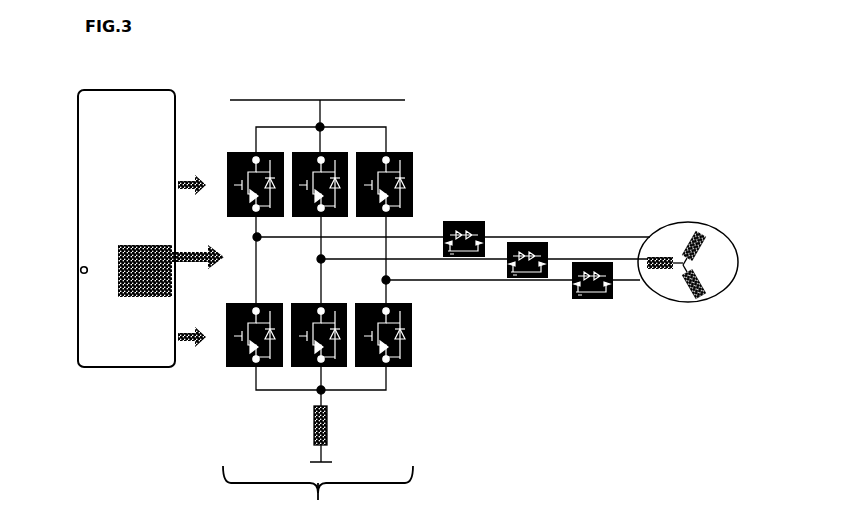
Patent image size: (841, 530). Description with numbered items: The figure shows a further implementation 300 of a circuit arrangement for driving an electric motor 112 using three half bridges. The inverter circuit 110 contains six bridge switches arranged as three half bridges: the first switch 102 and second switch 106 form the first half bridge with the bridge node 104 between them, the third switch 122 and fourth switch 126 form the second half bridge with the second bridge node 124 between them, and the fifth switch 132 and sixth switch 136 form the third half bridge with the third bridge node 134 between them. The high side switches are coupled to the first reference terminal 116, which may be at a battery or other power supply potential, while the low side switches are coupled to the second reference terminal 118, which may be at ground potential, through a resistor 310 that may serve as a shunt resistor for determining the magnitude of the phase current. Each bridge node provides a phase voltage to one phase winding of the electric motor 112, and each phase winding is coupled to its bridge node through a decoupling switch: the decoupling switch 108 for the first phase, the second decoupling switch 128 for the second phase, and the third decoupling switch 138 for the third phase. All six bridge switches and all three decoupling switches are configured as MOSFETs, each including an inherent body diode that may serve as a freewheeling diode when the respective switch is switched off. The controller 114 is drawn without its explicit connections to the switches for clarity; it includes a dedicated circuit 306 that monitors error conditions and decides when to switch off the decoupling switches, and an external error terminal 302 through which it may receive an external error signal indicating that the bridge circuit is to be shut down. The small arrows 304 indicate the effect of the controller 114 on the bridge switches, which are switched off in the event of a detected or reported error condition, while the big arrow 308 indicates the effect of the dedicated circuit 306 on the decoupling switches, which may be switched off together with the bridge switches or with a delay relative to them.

The implementation of a circuit arrangement 300 is at (612, 93).
The external error terminal 302 is at (82, 269).
The small arrows 304 is at (188, 196).
The dedicated circuit 306 is at (139, 245).
The big arrow 308 is at (222, 268).
The resistor 310 is at (313, 432).
The first switch 102 is at (236, 146).
The bridge node 104 is at (253, 239).
The second switch 106 is at (232, 366).
The decoupling switch 108 is at (453, 218).
The inverter circuit 110 is at (318, 498).
The electric motor 112 is at (709, 218).
The controller 114 is at (140, 77).
The first reference terminal 116 is at (405, 100).
The second reference terminal 118 is at (334, 461).
The third switch 122 is at (311, 140).
The second bridge node 124 is at (316, 261).
The fourth switch 126 is at (352, 368).
The second decoupling switch 128 is at (543, 240).
The fifth switch 132 is at (405, 150).
The third bridge node 134 is at (381, 281).
The sixth switch 136 is at (413, 325).
The third decoupling switch 138 is at (589, 300).